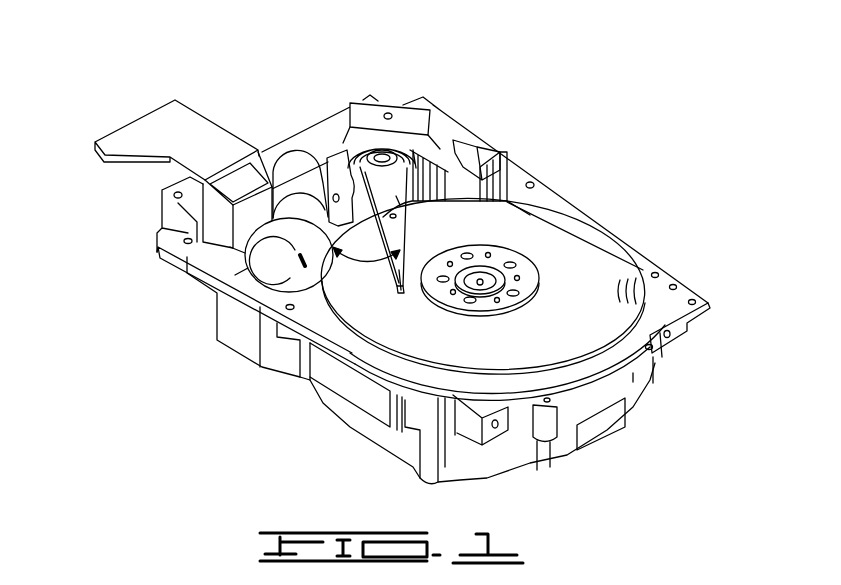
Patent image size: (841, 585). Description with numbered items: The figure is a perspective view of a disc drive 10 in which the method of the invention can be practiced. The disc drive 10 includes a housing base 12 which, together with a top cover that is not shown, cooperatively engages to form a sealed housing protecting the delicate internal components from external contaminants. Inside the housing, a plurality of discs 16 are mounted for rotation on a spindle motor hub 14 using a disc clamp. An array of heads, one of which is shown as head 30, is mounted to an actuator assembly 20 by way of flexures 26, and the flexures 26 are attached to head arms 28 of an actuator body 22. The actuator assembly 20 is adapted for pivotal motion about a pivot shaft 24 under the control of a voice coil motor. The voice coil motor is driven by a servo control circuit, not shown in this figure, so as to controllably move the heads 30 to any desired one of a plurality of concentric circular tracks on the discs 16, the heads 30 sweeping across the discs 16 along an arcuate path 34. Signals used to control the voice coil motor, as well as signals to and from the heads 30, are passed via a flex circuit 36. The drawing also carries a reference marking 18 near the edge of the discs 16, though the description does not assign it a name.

The disc drive 10 is at (150, 95).
The housing base 12 is at (327, 404).
The spindle motor hub 14 is at (497, 280).
The discs 16 is at (552, 222).
The disk rotation 18 is at (637, 283).
The actuator assembly 20 is at (323, 160).
The actuator body 22 is at (386, 204).
The pivot shaft 24 is at (420, 145).
The flexures 26 is at (403, 262).
The head arms 28 is at (400, 199).
The heads 30 is at (403, 285).
The arcuate path 34 is at (335, 257).
The flex circuit 36 is at (293, 163).